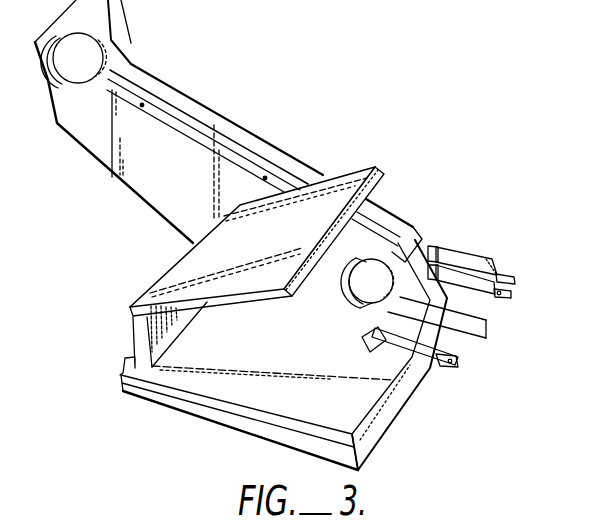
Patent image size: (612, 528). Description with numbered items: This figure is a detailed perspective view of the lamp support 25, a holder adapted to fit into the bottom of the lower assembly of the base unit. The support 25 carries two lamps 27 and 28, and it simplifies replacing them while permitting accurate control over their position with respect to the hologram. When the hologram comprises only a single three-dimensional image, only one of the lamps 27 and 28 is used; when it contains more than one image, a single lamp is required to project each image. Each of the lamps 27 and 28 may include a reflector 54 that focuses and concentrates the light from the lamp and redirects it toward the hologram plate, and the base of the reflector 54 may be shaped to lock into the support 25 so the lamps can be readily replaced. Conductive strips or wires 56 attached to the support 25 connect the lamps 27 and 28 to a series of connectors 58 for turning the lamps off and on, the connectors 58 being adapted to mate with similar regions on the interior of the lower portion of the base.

The lamp support 25 is at (292, 168).
The lamp 27 is at (405, 316).
The lamp 28 is at (102, 76).
The reflector 54 is at (343, 307).
The conductive strips or wires 56 is at (202, 140).
The connectors 58 is at (512, 278).